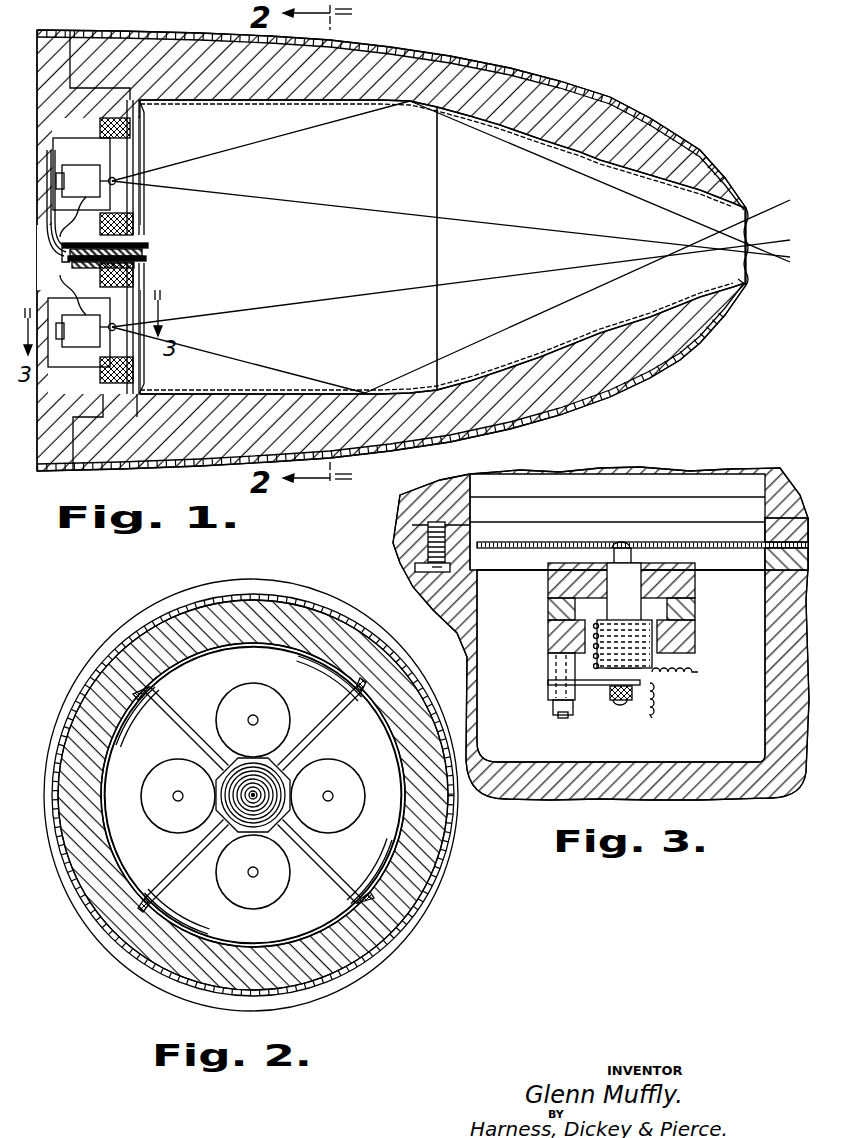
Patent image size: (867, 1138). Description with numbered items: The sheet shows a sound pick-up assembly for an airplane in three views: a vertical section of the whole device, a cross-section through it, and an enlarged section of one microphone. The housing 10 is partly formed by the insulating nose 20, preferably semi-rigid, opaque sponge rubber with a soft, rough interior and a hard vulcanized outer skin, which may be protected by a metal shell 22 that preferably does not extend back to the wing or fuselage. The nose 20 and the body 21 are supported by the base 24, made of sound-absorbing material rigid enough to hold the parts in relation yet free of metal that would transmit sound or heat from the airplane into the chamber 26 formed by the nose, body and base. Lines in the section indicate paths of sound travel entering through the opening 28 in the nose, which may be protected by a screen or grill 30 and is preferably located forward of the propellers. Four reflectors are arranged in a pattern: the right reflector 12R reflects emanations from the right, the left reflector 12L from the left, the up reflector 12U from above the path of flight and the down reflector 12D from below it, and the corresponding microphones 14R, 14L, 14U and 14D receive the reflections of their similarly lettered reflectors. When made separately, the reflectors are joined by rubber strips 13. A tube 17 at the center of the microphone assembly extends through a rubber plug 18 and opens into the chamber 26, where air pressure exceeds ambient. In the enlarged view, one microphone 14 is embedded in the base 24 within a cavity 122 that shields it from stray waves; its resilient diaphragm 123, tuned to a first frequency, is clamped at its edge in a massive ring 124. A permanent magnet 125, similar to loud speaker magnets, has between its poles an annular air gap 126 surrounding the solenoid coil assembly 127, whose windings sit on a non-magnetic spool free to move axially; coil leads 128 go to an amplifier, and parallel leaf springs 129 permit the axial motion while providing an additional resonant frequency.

In FIG. 1, the housing 10 is at (686, 364).
In FIG. 1, the down reflector 12D is at (381, 103).
In FIG. 2, the down reflector 12D is at (253, 668).
In FIG. 1, the up reflector 12U is at (206, 364).
In FIG. 2, the up reflector 12U is at (253, 922).
In FIG. 2, the left reflector 12L is at (130, 795).
In FIG. 2, the right reflector 12R is at (363, 795).
In FIG. 2, the rubber strips 13 is at (352, 900).
In FIG. 3, the microphone 14 is at (640, 490).
In FIG. 1, the down microphone 14D is at (118, 185).
In FIG. 2, the down microphone 14D is at (253, 720).
In FIG. 1, the up microphone 14U is at (122, 302).
In FIG. 2, the up microphone 14U is at (253, 872).
In FIG. 2, the left microphone 14L is at (178, 796).
In FIG. 2, the right microphone 14R is at (328, 796).
In FIG. 1, the tube 17 is at (148, 246).
In FIG. 2, the tube 17 is at (247, 805).
In FIG. 1, the rubber plug 18 is at (148, 262).
In FIG. 2, the rubber plug 18 is at (267, 813).
In FIG. 1, the insulating nose 20 is at (563, 84).
In FIG. 1, the body 21 is at (150, 46).
In FIG. 2, the body 21 is at (440, 840).
In FIG. 3, the body 21 is at (406, 502).
In FIG. 1, the metal shell 22 is at (470, 56).
In FIG. 2, the metal shell 22 is at (432, 884).
In FIG. 1, the base 24 is at (57, 47).
In FIG. 3, the base 24 is at (753, 796).
In FIG. 1, the chamber 26 is at (500, 309).
In FIG. 1, the opening 28 is at (738, 281).
In FIG. 1, the screen or grill 30 is at (753, 274).
In FIG. 1, the cavity 122 is at (85, 160).
In FIG. 3, the cavity 122 is at (642, 666).
In FIG. 3, the resilient diaphragm 123 is at (520, 546).
In FIG. 3, the massive ring 124 is at (766, 551).
In FIG. 3, the permanent magnet 125 is at (548, 588).
In FIG. 3, the annular air gap 126 is at (656, 653).
In FIG. 3, the solenoid coil assembly 127 is at (652, 669).
In FIG. 3, the coil leads 128 is at (698, 673).
In FIG. 3, the parallel leaf springs 129 is at (604, 697).